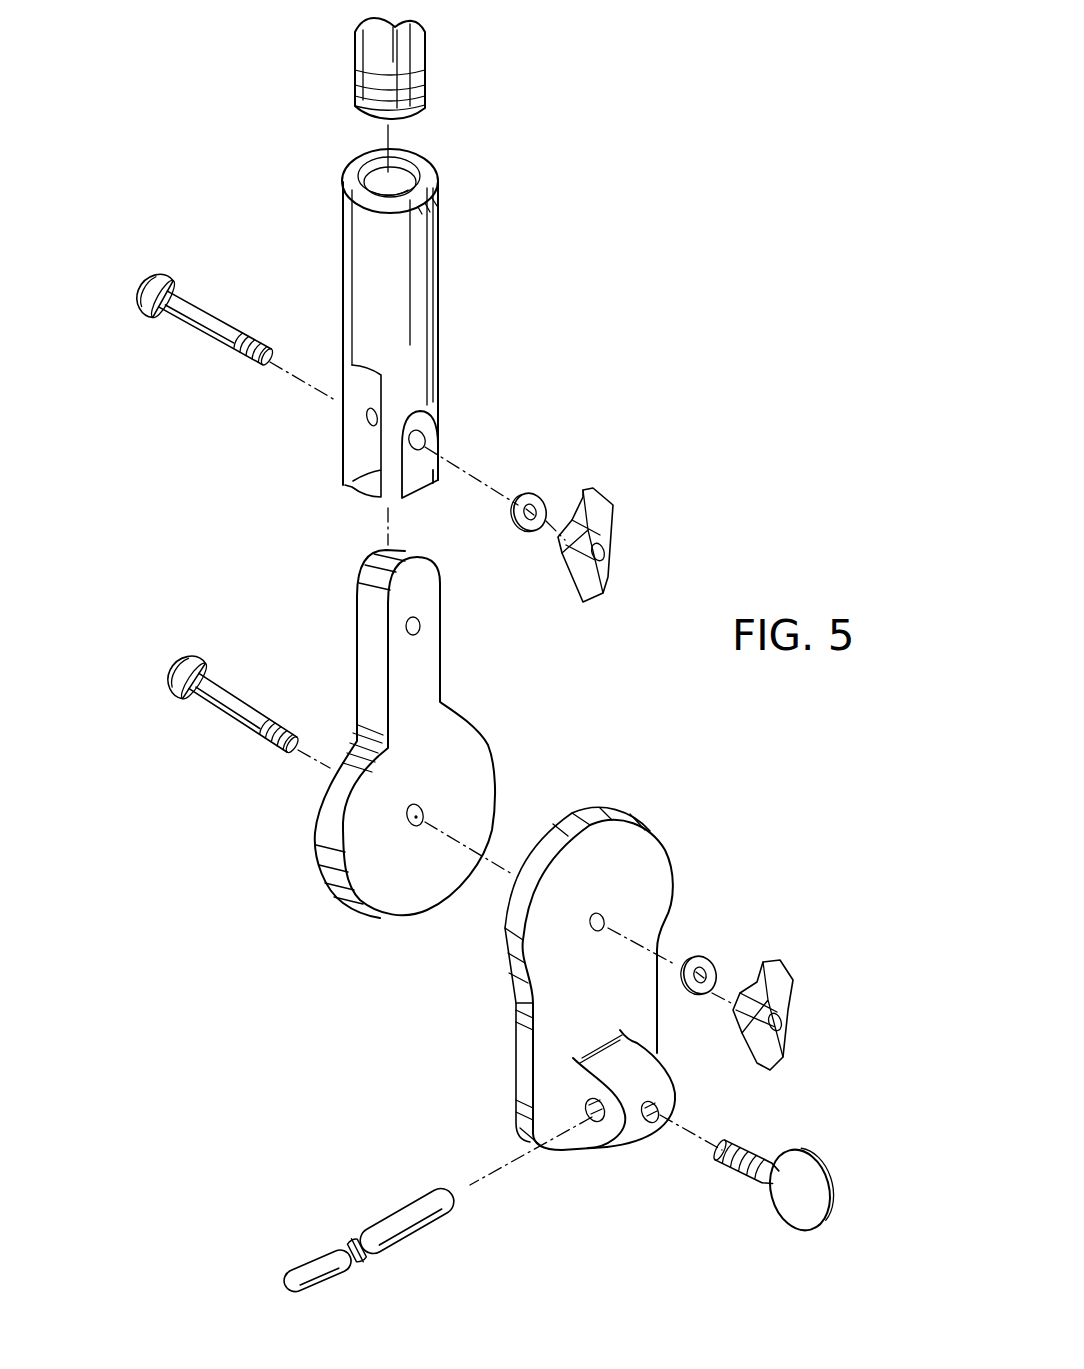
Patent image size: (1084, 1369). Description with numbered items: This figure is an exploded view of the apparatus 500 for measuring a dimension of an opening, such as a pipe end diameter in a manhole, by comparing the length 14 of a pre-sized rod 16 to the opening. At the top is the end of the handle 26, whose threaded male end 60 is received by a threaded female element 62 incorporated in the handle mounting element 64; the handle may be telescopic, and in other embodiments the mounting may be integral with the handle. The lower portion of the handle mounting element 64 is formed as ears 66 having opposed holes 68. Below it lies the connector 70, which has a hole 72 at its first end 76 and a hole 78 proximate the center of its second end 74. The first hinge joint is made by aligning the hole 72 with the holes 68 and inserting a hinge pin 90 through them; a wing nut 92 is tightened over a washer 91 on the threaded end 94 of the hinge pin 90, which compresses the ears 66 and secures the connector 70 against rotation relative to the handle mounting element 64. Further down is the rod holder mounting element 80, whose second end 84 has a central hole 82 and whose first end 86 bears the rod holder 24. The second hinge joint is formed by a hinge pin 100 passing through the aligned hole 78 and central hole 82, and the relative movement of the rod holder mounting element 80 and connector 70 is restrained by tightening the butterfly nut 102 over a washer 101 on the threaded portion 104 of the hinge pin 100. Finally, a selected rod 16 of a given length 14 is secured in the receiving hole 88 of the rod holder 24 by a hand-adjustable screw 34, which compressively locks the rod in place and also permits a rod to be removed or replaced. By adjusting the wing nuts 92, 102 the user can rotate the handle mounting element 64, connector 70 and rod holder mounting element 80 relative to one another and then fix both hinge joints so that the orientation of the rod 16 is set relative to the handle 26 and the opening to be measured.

The length 14 is at (441, 1152).
The pre-sized rod 16 is at (422, 1232).
The rod holder 24 is at (678, 1098).
The handle 26 is at (427, 60).
The screw 34 is at (810, 1150).
The threaded male end 60 is at (427, 97).
The threaded female element 62 is at (412, 177).
The handle mounting element 64 is at (442, 238).
The ears 66 is at (345, 433).
The holes 68 is at (425, 437).
The connector 70 is at (442, 683).
The hole 72 is at (421, 626).
The second end 74 is at (494, 800).
The first end 76 is at (428, 558).
The hole 78 is at (422, 810).
The rod holder mounting element 80 is at (675, 852).
The central hole 82 is at (604, 920).
The second end 84 is at (503, 940).
The first end 86 is at (518, 1068).
The receiving hole 88 is at (596, 1120).
The hinge pin 90 is at (207, 316).
The washer 91 is at (530, 493).
The wing nut 92 is at (600, 497).
The threaded end 94 is at (252, 340).
The hinge pin 100 is at (232, 696).
The washer 101 is at (716, 960).
The wing nut 102 is at (775, 980).
The threaded portion 104 is at (262, 740).
The apparatus 500 is at (538, 257).